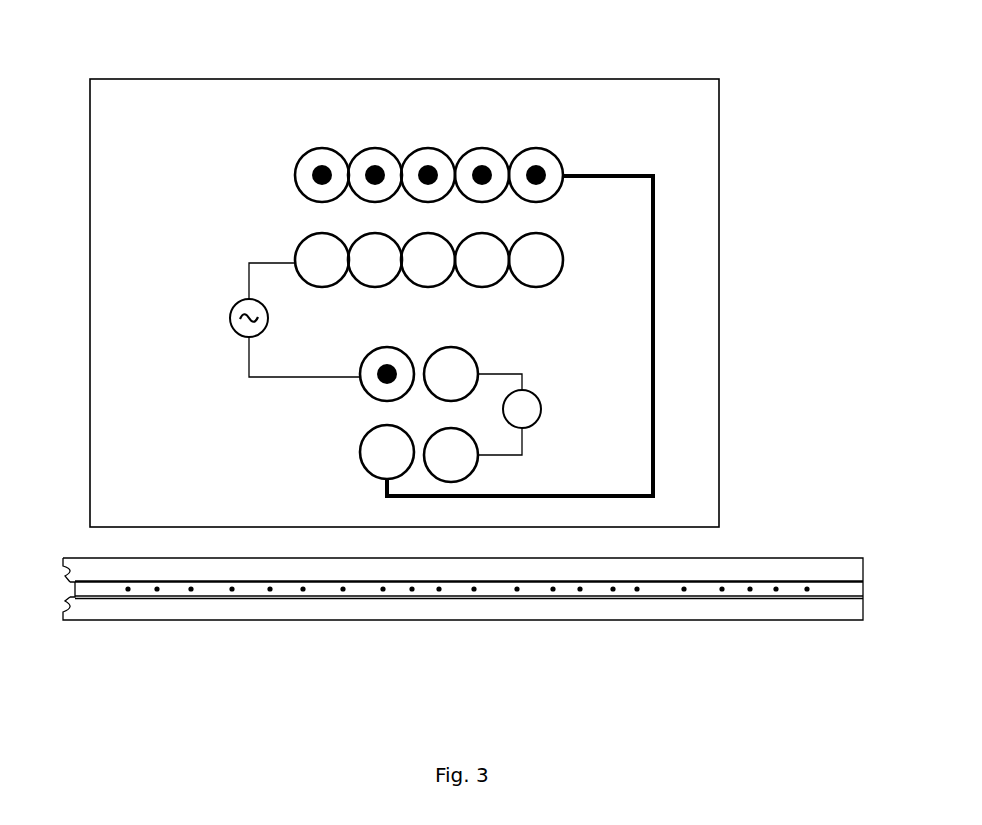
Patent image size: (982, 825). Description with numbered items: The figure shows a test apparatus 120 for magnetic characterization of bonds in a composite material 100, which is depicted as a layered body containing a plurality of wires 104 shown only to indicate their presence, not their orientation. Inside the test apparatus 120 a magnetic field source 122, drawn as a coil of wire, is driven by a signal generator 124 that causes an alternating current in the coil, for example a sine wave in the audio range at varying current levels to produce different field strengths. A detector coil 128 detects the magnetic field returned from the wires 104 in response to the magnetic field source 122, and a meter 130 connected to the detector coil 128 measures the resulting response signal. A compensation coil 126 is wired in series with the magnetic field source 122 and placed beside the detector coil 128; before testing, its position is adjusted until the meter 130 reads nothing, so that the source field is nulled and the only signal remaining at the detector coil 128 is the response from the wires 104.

The composite material 100 is at (122, 621).
The wires 104 is at (750, 588).
The test apparatus 120 is at (562, 78).
The magnetic field source 122 is at (514, 126).
The signal generator 124 is at (226, 326).
The compensation coil 126 is at (331, 441).
The detector coil 128 is at (488, 345).
The meter 130 is at (541, 410).